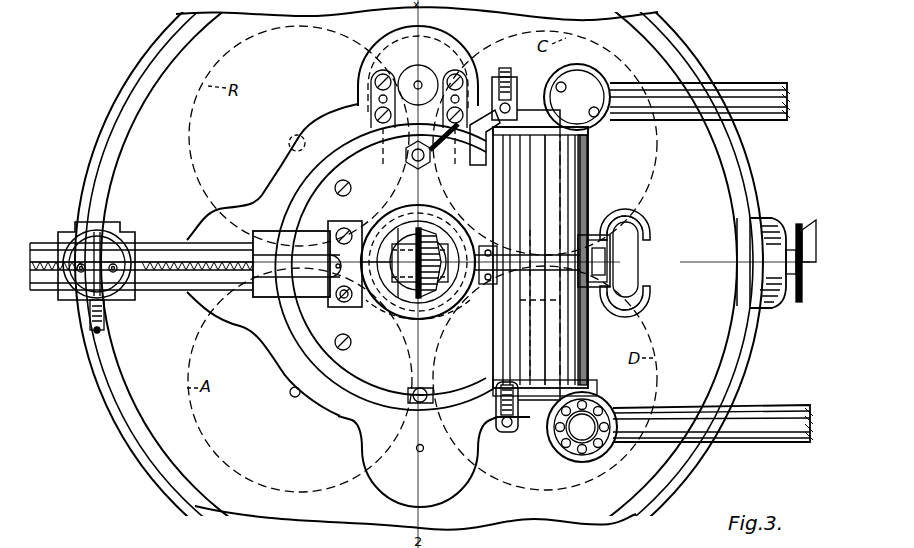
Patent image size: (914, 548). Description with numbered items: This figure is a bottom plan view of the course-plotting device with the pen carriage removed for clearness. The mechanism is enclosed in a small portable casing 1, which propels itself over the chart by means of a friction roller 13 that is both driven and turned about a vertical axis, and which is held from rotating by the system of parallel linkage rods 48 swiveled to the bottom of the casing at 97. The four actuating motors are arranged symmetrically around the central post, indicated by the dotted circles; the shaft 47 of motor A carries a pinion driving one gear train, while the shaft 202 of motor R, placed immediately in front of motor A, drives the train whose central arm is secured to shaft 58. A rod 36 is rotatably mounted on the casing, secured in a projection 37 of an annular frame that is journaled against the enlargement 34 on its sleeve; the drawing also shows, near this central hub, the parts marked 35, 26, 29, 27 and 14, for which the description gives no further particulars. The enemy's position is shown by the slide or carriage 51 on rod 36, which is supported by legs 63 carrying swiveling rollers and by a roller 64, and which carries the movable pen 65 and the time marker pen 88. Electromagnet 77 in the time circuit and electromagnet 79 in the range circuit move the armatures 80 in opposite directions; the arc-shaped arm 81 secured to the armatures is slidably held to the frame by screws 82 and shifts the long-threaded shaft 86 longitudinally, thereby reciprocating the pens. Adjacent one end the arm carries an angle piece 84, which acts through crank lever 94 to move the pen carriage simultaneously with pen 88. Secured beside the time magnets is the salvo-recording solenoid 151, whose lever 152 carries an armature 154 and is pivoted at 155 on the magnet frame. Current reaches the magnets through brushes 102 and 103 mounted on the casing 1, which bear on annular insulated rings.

The casing 1 is at (252, 424).
The friction roller 13 is at (404, 232).
The cylinder wall 14 is at (558, 388).
The bearing block 26 is at (440, 242).
The cylinder 27 is at (545, 261).
The pivot opening 29 is at (425, 80).
The enlargement on sleeve 34 is at (448, 306).
The bevel gear 35 is at (420, 226).
The rod 36 is at (418, 333).
The projection 37 is at (297, 264).
The shaft of motor A 47 is at (295, 397).
The parallel linkage rods 48 is at (711, 262).
The slide or carriage 51 is at (124, 240).
The shaft 58 is at (415, 449).
The legs 63 is at (516, 104).
The roller 64 is at (104, 328).
The movable pen 65 is at (77, 261).
The electromagnet 77 is at (586, 218).
The electromagnet 79 is at (588, 330).
The armatures 80 is at (470, 220).
The arc-shaped arm 81 is at (418, 322).
The screws 82 is at (358, 232).
The angle piece 84 is at (336, 236).
The long-threaded shaft 86 is at (165, 258).
The time marker pen 88 is at (109, 261).
The crank lever 94 is at (350, 292).
The swivel 97 is at (604, 462).
The brush 102 is at (376, 112).
The brush 103 is at (450, 120).
The solenoid 151 is at (648, 228).
The lever 152 is at (540, 290).
The armature 154 is at (607, 261).
The pivot 155 is at (538, 305).
The shaft of motor R 202 is at (291, 135).